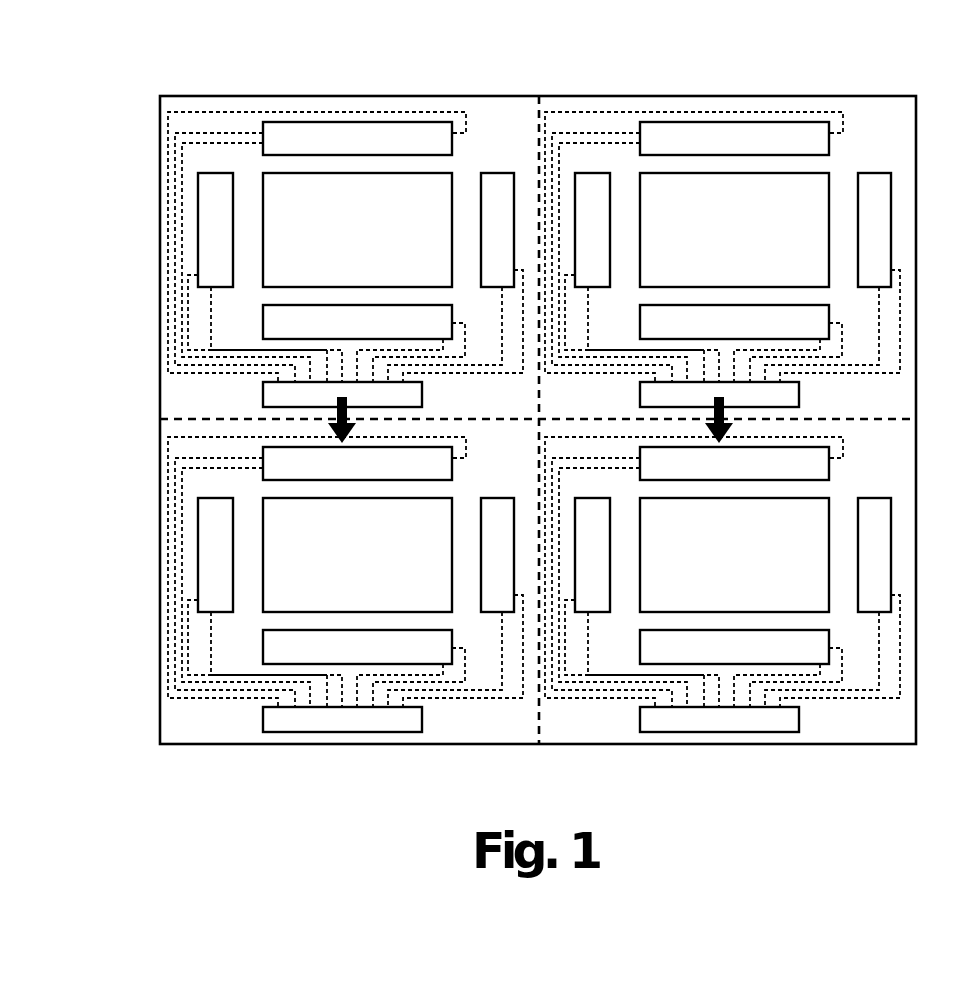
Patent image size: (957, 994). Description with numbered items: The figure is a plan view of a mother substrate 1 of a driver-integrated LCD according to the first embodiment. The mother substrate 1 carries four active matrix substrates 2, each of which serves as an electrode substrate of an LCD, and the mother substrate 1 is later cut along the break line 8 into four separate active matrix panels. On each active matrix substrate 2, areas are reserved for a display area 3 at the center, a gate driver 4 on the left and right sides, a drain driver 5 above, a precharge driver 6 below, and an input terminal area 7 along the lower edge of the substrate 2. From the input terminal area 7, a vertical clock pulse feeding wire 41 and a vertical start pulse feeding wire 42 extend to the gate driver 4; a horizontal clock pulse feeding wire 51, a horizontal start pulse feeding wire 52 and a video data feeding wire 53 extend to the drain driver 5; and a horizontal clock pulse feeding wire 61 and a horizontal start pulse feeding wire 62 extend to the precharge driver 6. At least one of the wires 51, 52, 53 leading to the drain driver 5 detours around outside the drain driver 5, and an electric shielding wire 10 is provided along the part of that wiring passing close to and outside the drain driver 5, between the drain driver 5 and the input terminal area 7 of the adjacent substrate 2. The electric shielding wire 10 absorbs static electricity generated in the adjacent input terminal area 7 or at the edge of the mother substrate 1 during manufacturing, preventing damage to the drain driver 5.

The mother substrate 1 is at (157, 110).
The active matrix substrate 2 is at (508, 123).
The display area 3 is at (322, 190).
The gate driver 4 is at (213, 217).
The drain driver 5 is at (375, 130).
The precharge driver 6 is at (272, 325).
The input terminal area 7 is at (265, 397).
The break line 8 is at (540, 96).
The electric shielding wire 10 is at (283, 110).
The vertical clock pulse feeding wire 41 is at (167, 630).
The vertical start pulse feeding wire 42 is at (167, 657).
The horizontal clock pulse feeding wire 51 is at (160, 468).
The horizontal start pulse feeding wire 52 is at (167, 523).
The video data feeding wire 53 is at (165, 563).
The horizontal clock pulse feeding wire 61 is at (437, 676).
The horizontal start pulse feeding wire 62 is at (458, 680).